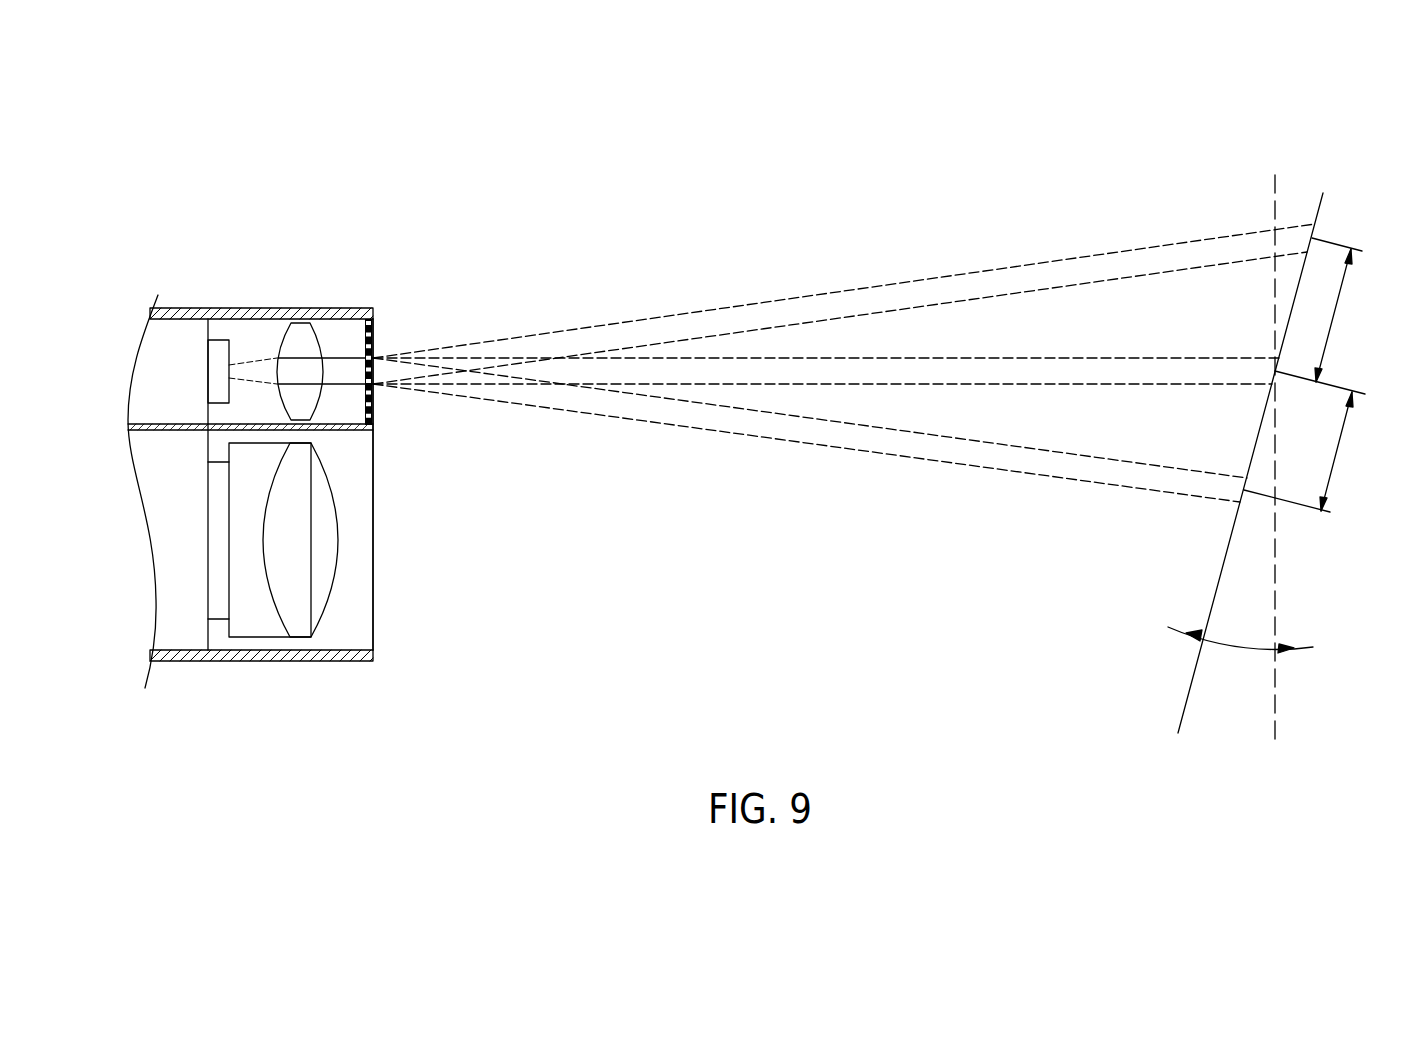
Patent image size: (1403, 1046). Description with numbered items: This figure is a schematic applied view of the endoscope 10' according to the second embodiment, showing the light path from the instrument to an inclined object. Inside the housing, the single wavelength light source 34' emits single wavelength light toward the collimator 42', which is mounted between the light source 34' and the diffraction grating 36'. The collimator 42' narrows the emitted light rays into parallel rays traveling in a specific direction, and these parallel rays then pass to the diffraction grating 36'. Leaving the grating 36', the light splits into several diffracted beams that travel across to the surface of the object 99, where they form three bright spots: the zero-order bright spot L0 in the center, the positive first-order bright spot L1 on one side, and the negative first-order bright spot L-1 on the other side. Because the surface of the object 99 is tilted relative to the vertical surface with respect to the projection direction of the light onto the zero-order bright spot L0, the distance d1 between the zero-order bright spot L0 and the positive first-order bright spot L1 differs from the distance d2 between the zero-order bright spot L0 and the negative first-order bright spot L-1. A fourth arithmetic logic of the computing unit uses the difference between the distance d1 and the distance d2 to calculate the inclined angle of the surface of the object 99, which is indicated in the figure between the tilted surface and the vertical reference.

The endoscope 10' is at (250, 381).
The single wavelength light source 34' is at (242, 282).
The collimator 42' is at (321, 325).
The diffraction grating 36' is at (388, 322).
The object 99 is at (1190, 683).
The positive first-order bright spot L1 is at (1312, 240).
The zero-order bright spot L0 is at (1275, 372).
The negative first-order bright spot L-1 is at (1245, 492).
The distance between the zero-order bright spot and the positive first-order bright d1 is at (1320, 316).
The distance between the zero-order bright spot and the negative first-order bright d2 is at (1304, 452).